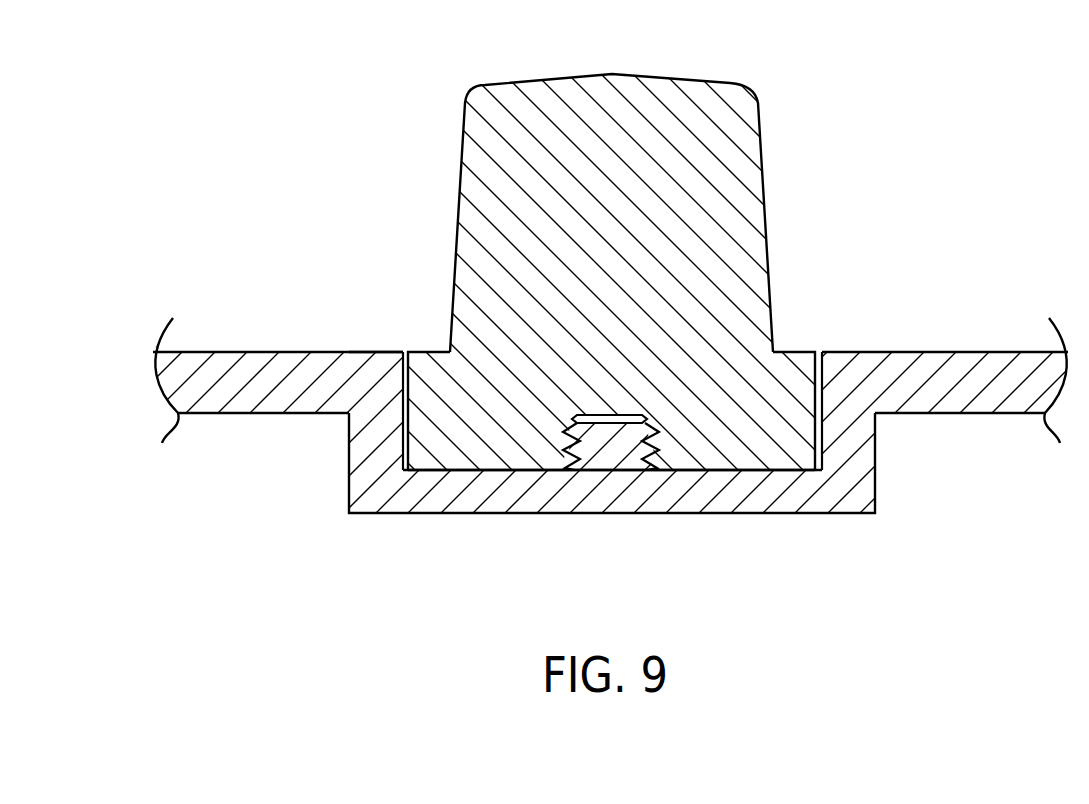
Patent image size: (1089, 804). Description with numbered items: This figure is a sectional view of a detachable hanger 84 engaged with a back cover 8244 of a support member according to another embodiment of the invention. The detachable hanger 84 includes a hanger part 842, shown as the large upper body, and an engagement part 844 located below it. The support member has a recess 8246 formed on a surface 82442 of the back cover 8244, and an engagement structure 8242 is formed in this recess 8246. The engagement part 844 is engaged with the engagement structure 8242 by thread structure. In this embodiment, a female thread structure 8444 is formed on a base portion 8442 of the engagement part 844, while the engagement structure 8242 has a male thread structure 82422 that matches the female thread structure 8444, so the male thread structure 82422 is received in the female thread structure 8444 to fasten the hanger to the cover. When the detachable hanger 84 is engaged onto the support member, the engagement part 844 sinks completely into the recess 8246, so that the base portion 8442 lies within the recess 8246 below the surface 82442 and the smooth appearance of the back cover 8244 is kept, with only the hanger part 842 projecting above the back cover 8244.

The detachable hanger 84 is at (547, 270).
The hanger part 842 is at (727, 183).
The engagement part 844 is at (719, 321).
The base portion 8442 is at (787, 382).
The female thread structure 8444 is at (657, 422).
The back cover 8244 is at (238, 353).
The surface 82442 is at (340, 352).
The engagement structure 8242 is at (818, 513).
The male thread structure 82422 is at (645, 437).
The recess 8246 is at (827, 424).